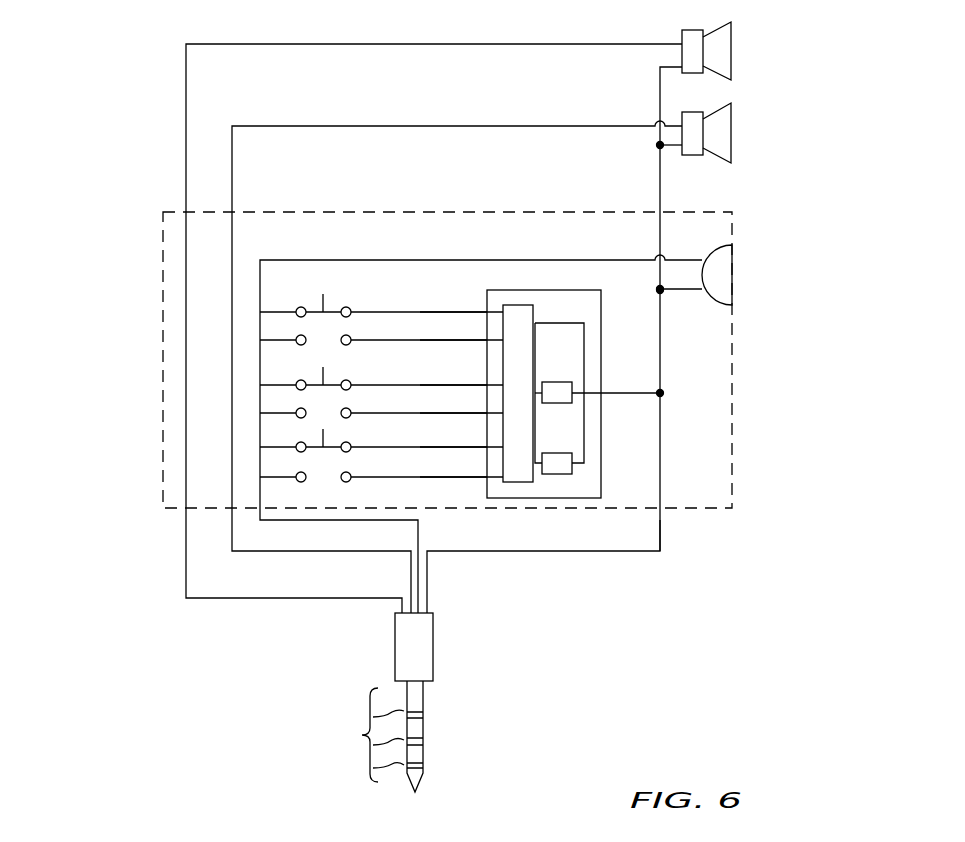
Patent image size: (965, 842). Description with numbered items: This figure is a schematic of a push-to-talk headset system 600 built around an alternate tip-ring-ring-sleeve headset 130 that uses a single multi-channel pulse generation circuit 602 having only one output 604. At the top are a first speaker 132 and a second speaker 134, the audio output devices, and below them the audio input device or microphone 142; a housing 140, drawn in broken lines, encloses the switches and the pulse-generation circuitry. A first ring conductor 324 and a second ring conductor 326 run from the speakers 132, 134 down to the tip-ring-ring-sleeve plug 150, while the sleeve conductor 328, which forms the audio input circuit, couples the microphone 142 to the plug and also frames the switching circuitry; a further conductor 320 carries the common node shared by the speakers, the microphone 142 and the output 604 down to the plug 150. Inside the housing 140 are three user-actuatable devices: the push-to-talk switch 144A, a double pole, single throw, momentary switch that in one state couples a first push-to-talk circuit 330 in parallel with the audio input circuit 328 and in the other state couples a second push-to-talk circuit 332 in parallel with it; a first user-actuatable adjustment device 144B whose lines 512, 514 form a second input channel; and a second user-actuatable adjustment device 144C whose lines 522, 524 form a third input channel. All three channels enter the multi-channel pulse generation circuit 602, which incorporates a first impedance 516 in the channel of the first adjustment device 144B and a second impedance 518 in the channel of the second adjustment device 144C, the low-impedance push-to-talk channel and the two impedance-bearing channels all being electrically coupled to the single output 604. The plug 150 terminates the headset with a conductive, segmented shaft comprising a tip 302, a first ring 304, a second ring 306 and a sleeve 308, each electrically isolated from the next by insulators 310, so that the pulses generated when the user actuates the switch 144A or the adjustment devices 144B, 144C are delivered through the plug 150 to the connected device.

The circuit system 600 is at (860, 68).
The tip-ring-ring-sleeve headset 130 is at (142, 632).
The housing 140 is at (733, 410).
The first audio output device or speaker 132 is at (731, 52).
The second speaker 134 is at (731, 133).
The audio input device or microphone 142 is at (732, 275).
The first ring conductor 324 is at (485, 44).
The second ring conductor 326 is at (510, 126).
The sleeve conductor / audio input circuit 328 is at (500, 260).
The ground wire 320 is at (661, 532).
The user-actuatable push-to-talk switch 144A is at (337, 308).
The first user-actuatable adjustment device 144B is at (337, 381).
The second user-actuatable adjustment device 144C is at (337, 443).
The first push-to-talk circuit 330 is at (420, 312).
The second push-to-talk circuit 332 is at (420, 340).
The switch line 512 is at (420, 385).
The switch line 514 is at (420, 413).
The switch line 522 is at (420, 447).
The switch line 524 is at (420, 477).
The multi-channel pulse generation circuit 602 is at (602, 335).
The first impedance 516 is at (557, 382).
The second resistor R2 518 is at (557, 453).
The single output 604 is at (626, 398).
The tip-ring-ring-sleeve plug 150 is at (433, 648).
The sleeve 308 is at (423, 690).
The second ring 306 is at (423, 728).
The first ring 304 is at (423, 753).
The tip 302 is at (423, 777).
The insulators 310 is at (364, 735).